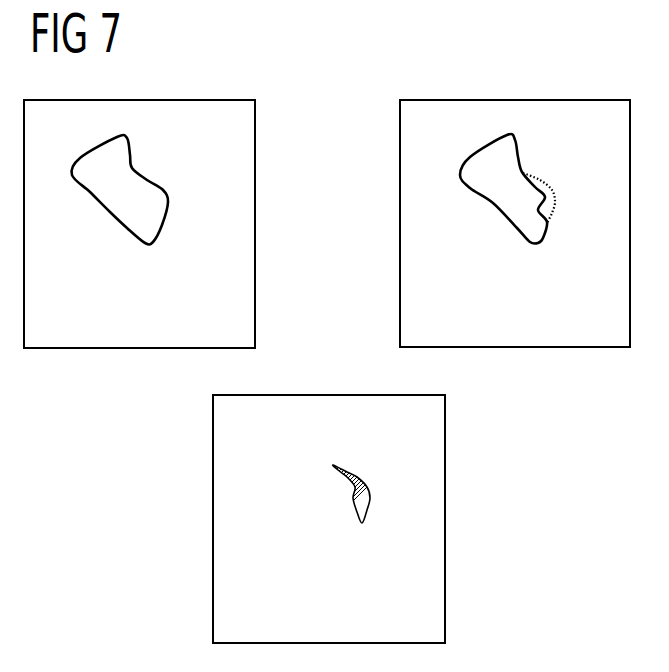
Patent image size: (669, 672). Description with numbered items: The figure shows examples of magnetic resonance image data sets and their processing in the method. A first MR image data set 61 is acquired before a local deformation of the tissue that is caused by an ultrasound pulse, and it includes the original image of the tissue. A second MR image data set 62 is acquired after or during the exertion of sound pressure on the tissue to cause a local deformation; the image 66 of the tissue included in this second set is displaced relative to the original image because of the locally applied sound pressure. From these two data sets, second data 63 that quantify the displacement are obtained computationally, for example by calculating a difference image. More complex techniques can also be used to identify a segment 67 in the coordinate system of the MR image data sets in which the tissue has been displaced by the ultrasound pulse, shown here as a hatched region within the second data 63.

The first MR image data set 61 is at (199, 100).
The second MR image data set 62 is at (513, 100).
The second data 63 is at (328, 395).
The image of the tissue 66 is at (497, 198).
The segment 67 is at (354, 472).